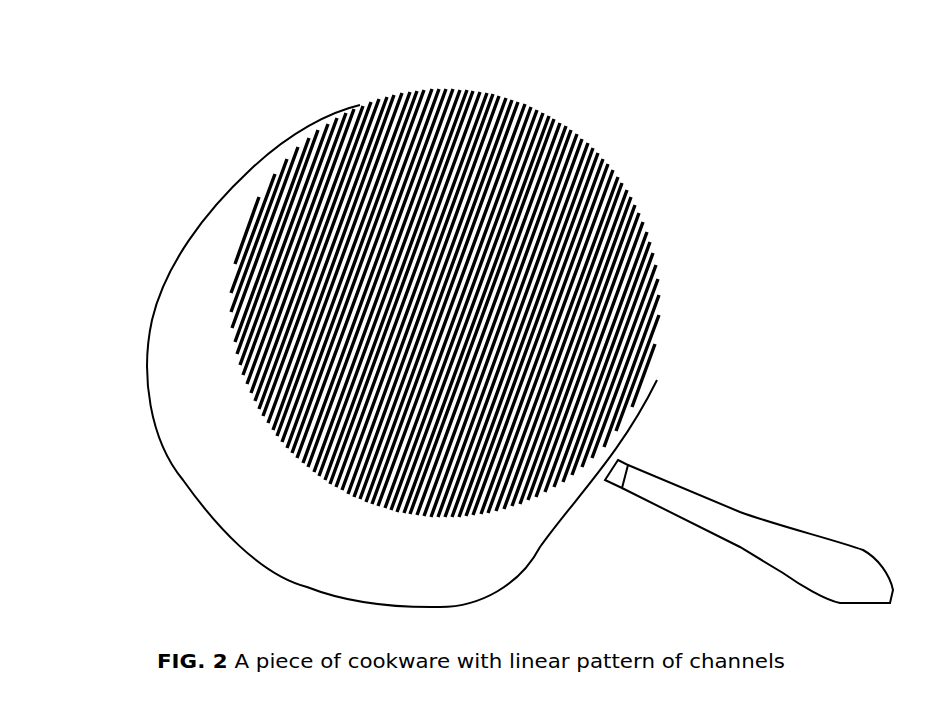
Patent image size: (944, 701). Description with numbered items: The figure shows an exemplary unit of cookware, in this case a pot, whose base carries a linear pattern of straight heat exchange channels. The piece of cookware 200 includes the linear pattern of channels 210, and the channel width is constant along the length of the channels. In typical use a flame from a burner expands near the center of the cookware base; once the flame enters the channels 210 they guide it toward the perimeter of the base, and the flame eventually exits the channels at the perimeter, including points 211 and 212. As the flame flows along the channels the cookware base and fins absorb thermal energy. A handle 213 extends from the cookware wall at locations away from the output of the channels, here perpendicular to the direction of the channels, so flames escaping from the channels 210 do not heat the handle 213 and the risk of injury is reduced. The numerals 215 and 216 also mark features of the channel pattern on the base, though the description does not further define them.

The cookware 200 is at (206, 207).
The channels 210 is at (543, 316).
The side wall 211 is at (340, 480).
The cooking surface 212 is at (570, 142).
The handle 213 is at (807, 545).
The channel 215 is at (503, 143).
The ridge 216 is at (323, 222).